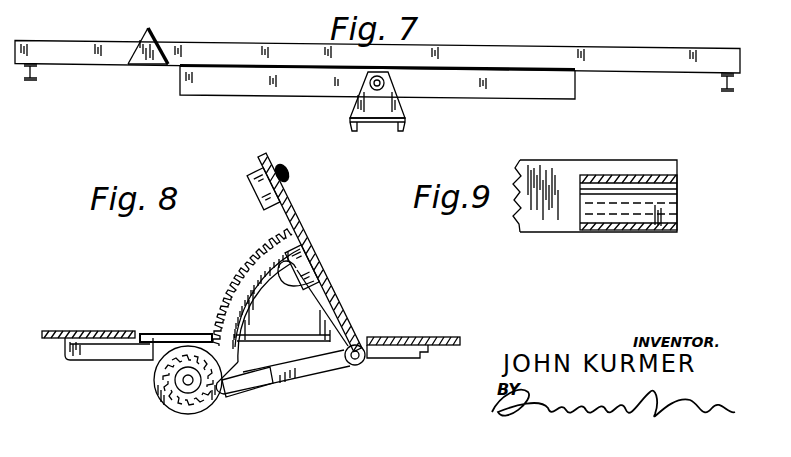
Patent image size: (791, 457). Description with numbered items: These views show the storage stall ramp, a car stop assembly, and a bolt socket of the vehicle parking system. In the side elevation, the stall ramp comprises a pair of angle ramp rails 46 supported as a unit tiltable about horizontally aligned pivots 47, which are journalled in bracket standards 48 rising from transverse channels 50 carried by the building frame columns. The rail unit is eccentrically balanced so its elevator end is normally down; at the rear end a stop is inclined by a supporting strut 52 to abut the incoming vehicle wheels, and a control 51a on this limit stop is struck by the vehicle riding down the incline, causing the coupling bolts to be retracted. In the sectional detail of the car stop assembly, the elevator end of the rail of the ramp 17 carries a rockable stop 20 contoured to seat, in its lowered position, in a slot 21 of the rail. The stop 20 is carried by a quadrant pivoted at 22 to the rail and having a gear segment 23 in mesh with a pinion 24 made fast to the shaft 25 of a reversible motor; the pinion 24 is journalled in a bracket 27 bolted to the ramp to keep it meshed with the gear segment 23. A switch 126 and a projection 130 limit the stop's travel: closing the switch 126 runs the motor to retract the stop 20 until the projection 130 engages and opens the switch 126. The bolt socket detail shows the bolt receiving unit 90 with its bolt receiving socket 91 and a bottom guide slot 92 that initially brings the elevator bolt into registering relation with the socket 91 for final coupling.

In FIG. 7, the angle ramp rails 46 is at (580, 58).
In FIG. 7, the pivots 47 is at (384, 77).
In FIG. 7, the bracket standards 48 is at (385, 100).
In FIG. 7, the transverse channels 50 is at (402, 128).
In FIG. 7, the control 51a is at (160, 35).
In FIG. 7, the supporting strut 52 is at (143, 41).
In FIG. 8, the ramp 17 is at (76, 331).
In FIG. 8, the rockable stop 20 is at (291, 208).
In FIG. 8, the slot 21 is at (172, 335).
In FIG. 8, the pivot 22 is at (357, 362).
In FIG. 8, the gear segment 23 is at (232, 284).
In FIG. 8, the pinion 24 is at (181, 406).
In FIG. 8, the shaft 25 is at (184, 381).
In FIG. 8, the bracket 27 is at (115, 350).
In FIG. 8, the switch 126 is at (314, 281).
In FIG. 8, the projection 130 is at (255, 390).
In FIG. 9, the bolt receiving unit 90 is at (648, 175).
In FIG. 9, the bolt receiving socket 91 is at (598, 195).
In FIG. 9, the guide slot 92 is at (660, 231).